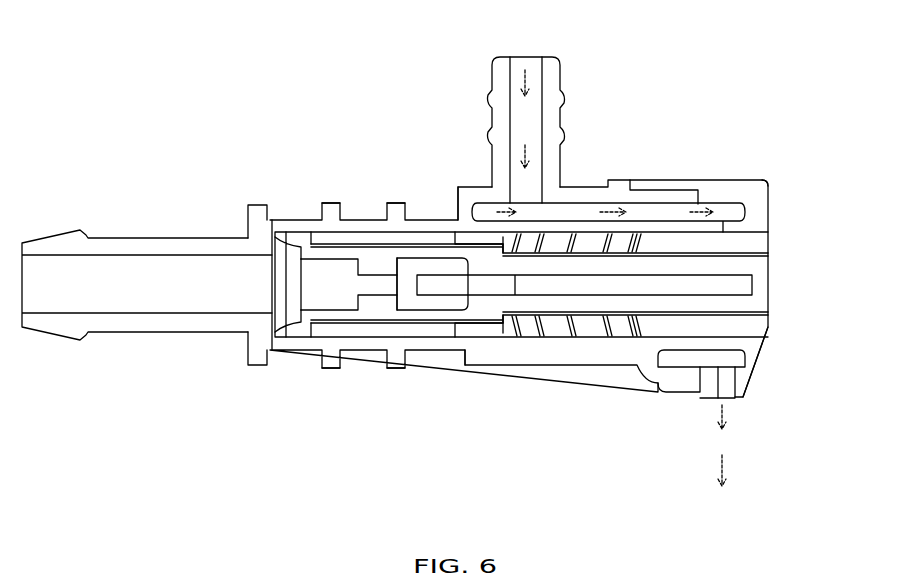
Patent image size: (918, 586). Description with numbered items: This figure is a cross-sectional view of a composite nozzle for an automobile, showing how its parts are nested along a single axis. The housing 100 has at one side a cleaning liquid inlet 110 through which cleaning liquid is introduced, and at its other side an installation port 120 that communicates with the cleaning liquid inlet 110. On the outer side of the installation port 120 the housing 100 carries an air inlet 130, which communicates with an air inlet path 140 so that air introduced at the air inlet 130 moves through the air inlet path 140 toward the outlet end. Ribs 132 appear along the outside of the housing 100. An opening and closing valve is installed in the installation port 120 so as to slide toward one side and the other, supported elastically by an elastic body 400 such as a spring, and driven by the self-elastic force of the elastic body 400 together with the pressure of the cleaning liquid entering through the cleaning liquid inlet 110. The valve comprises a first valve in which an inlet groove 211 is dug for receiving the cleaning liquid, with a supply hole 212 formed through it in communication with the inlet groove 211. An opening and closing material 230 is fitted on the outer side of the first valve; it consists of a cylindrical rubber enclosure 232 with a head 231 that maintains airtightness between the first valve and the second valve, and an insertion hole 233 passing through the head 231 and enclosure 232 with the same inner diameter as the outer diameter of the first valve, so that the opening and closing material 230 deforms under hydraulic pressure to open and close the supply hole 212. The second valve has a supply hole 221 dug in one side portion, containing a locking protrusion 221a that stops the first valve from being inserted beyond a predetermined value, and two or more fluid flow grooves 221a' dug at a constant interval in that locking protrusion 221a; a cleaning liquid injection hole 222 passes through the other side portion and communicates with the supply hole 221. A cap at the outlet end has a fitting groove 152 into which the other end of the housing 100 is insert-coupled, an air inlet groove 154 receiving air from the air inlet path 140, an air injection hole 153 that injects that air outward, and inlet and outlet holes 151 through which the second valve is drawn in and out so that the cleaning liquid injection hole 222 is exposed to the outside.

The housing 100 is at (288, 220).
The cleaning liquid inlet 110 is at (102, 300).
The installation port 120 is at (440, 220).
The air inlet 130 is at (553, 62).
The ribs 132 is at (360, 230).
The air inlet path 140 is at (683, 205).
The inlet and outlet holes 151 is at (768, 230).
The fitting groove 152 is at (682, 370).
The air injection hole 153 is at (748, 400).
The air inlet groove 154 is at (735, 205).
The inlet groove 211 is at (287, 330).
The supply hole 212 is at (378, 270).
The supply hole 221 is at (557, 287).
The locking protrusion 221a is at (462, 144).
The fluid flow grooves 221a' is at (502, 370).
The cleaning liquid injection hole 222 is at (773, 307).
The opening and closing material 230 is at (409, 385).
The head 231 is at (326, 354).
The enclosure 232 is at (400, 313).
The insertion hole 233 is at (407, 290).
The elastic body 400 is at (633, 195).